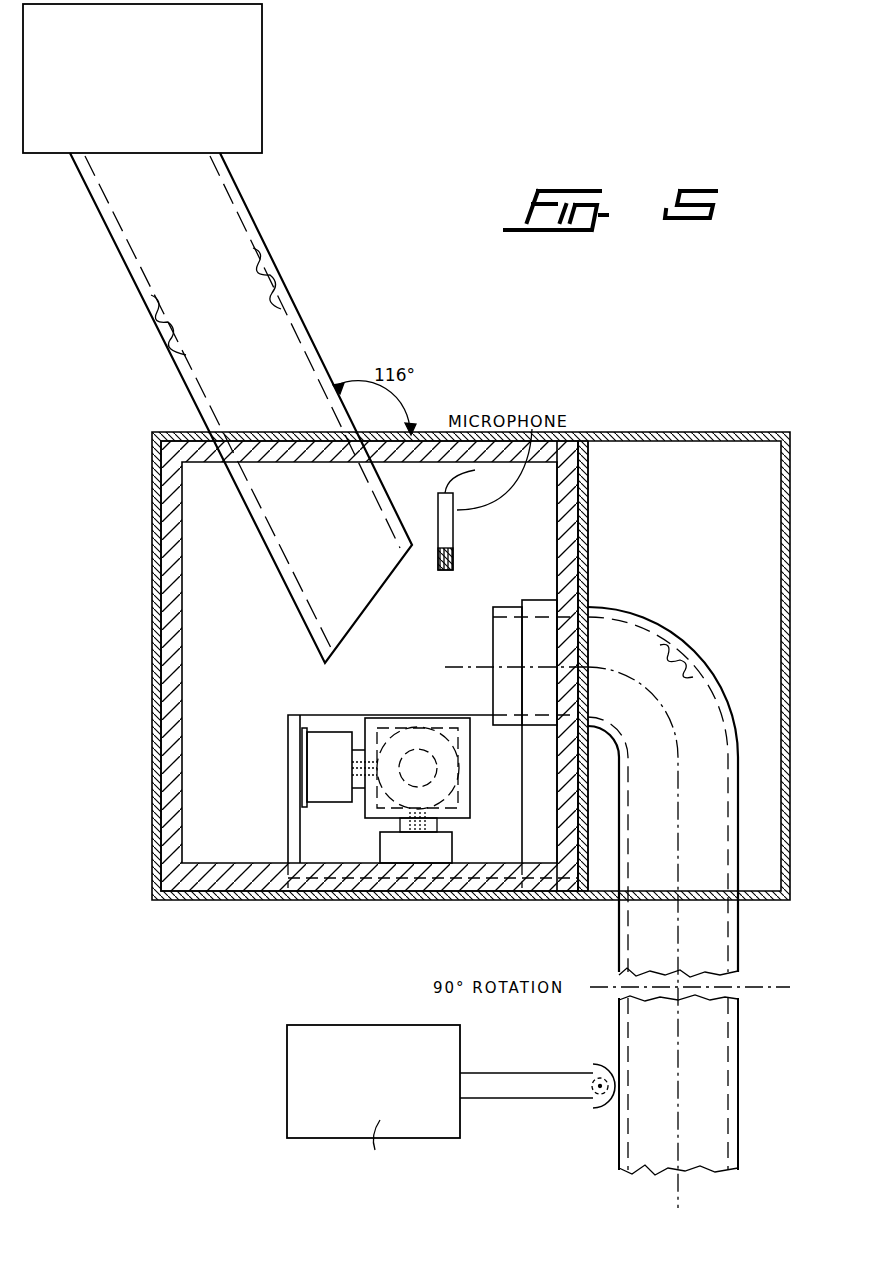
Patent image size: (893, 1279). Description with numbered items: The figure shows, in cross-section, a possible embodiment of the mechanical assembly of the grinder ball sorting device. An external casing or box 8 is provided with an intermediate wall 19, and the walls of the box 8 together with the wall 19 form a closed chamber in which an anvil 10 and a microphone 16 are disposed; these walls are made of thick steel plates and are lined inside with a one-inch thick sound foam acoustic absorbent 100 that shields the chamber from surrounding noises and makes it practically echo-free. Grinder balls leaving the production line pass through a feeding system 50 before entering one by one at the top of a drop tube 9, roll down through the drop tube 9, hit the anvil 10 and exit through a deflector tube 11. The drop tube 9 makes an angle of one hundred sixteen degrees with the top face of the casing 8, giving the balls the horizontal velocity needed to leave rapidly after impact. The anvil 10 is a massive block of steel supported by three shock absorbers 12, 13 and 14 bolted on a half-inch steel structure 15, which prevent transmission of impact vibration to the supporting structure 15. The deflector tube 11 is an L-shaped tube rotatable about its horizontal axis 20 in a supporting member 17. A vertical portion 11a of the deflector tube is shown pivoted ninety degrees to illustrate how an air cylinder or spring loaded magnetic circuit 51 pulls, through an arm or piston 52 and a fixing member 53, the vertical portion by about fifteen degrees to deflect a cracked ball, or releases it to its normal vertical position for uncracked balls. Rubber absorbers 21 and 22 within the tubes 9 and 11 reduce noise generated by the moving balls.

The external casing or box 8 is at (152, 600).
The drop tube 9 is at (315, 346).
The anvil 10 is at (472, 773).
The deflector tube 11 is at (705, 676).
The vertical portion of the deflector tube 11a is at (638, 1165).
The shock absorber 12 is at (317, 792).
The shock absorber 13 is at (378, 853).
The shock absorber 14 is at (467, 800).
The steel structure 15 is at (288, 795).
The microphone 16 is at (455, 543).
The supporting member 17 is at (533, 598).
The intermediate wall 19 is at (590, 545).
The horizontal axis 20 is at (470, 643).
The absorber 21 is at (272, 294).
The absorber 22 is at (683, 667).
The feeding system 50 is at (243, 72).
The air cylinder or spring loaded magnetic circuit 51 is at (325, 1033).
The arm or piston 52 is at (525, 1082).
The fixing member 53 is at (600, 1107).
The sound foam acoustic absorbent 100 is at (200, 882).